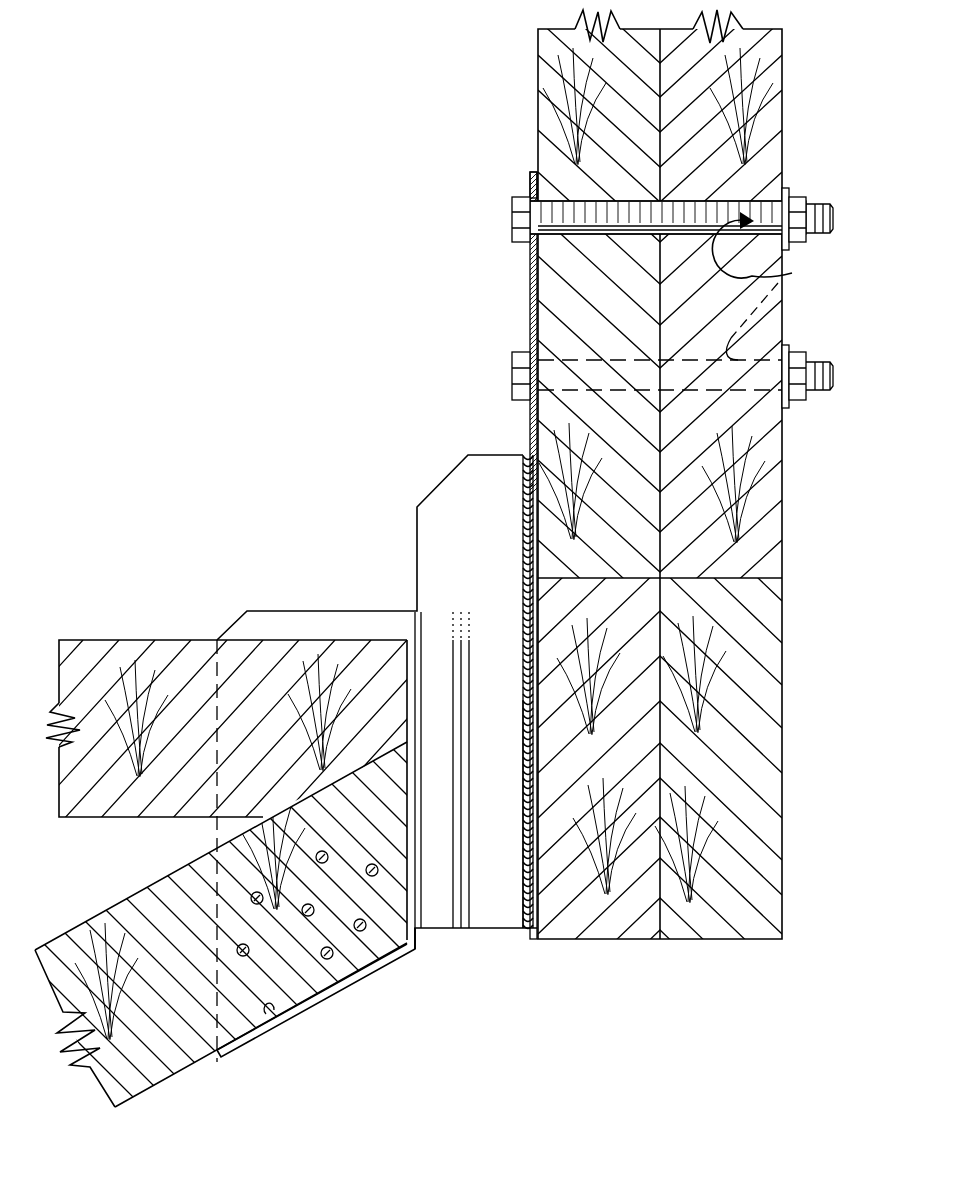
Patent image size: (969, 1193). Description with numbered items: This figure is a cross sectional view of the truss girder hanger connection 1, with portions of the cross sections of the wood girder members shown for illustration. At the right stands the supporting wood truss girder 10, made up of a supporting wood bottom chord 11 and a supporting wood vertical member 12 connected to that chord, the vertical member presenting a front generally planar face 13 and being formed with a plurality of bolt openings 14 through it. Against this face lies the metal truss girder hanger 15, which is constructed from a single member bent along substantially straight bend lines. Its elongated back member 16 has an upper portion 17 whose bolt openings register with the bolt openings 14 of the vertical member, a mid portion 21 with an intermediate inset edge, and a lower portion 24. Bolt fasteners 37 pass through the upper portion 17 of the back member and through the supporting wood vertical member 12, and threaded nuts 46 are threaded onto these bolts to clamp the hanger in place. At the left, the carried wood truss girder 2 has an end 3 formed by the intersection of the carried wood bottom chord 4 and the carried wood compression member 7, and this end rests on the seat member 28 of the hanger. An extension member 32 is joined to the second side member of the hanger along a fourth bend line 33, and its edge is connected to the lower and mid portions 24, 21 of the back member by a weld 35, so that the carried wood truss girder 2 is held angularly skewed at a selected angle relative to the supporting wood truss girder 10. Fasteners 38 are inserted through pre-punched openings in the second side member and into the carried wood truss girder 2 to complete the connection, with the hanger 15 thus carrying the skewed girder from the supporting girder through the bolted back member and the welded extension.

The truss girder hanger connection 1 is at (362, 327).
The carried wood truss girder 2 is at (178, 1078).
The end 3 is at (352, 980).
The carried wood bottom chord 4 is at (98, 640).
The carried wood compression member 7 is at (128, 1110).
The supporting wood truss girder 10 is at (784, 577).
The supporting wood bottom chord 11 is at (784, 637).
The supporting wood vertical member 12 is at (784, 445).
The front generally planar face 13 is at (537, 62).
The bolt openings 14 is at (792, 273).
The metal truss girder hanger 15 is at (528, 177).
The elongated back member 16 is at (528, 256).
The upper portion 17 is at (528, 272).
The mid portion 21 is at (526, 488).
The lower portion 24 is at (525, 813).
The seat member 28 is at (266, 1014).
The extension member 32 is at (494, 558).
The fourth bend line 33 is at (420, 643).
The weld 35 is at (524, 572).
The bolt fasteners 37 is at (598, 238).
The fasteners 38 is at (317, 852).
The threaded nuts 46 is at (794, 190).